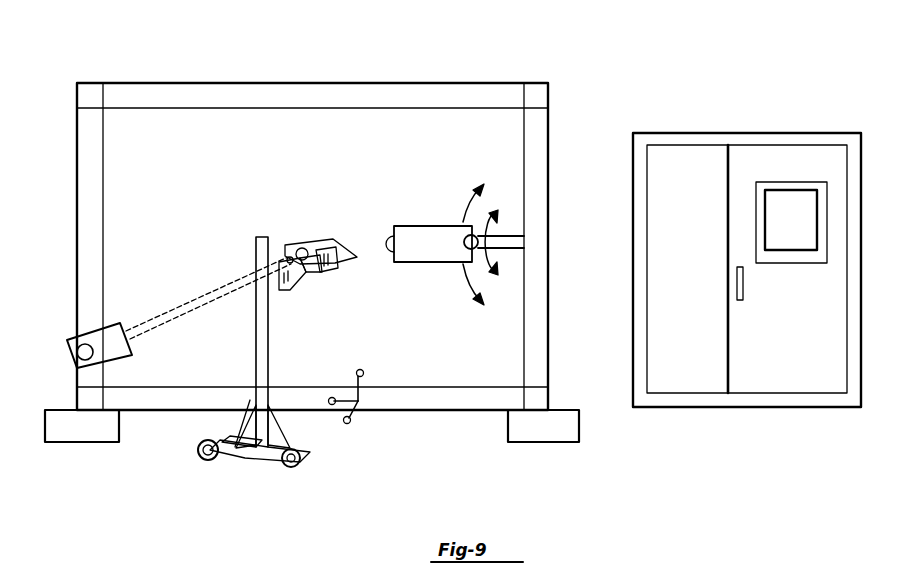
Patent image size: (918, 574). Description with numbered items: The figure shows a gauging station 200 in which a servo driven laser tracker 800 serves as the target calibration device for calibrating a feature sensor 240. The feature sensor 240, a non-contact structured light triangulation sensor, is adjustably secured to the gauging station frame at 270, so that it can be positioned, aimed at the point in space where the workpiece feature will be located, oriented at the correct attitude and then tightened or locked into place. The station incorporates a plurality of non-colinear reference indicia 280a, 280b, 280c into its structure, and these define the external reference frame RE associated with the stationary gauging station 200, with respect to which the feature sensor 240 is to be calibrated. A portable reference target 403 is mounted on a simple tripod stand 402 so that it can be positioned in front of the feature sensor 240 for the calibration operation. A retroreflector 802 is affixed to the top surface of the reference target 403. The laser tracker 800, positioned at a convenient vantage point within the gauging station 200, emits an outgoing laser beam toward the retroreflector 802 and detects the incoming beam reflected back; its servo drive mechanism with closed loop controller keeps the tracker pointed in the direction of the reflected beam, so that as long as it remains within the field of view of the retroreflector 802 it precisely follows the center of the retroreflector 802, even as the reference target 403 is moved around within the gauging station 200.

The gauging station 200 is at (170, 62).
The feature sensor 240 is at (413, 253).
The adjustable mount on gauging station frame 270 is at (476, 225).
The reference indicium 280a is at (362, 370).
The reference indicium 280b is at (346, 424).
The reference indicium 280c is at (331, 397).
The external reference frame RE is at (360, 402).
The tripod stand 402 is at (263, 255).
The reference target 403 is at (333, 207).
The servo driven laser tracker 800 is at (70, 351).
The retroreflector 802 is at (300, 249).